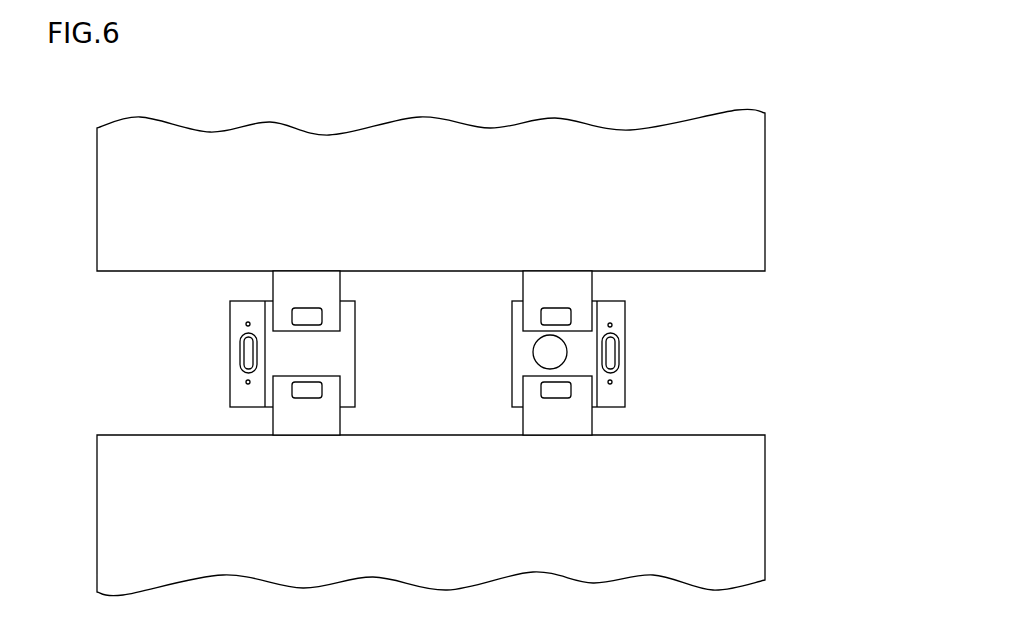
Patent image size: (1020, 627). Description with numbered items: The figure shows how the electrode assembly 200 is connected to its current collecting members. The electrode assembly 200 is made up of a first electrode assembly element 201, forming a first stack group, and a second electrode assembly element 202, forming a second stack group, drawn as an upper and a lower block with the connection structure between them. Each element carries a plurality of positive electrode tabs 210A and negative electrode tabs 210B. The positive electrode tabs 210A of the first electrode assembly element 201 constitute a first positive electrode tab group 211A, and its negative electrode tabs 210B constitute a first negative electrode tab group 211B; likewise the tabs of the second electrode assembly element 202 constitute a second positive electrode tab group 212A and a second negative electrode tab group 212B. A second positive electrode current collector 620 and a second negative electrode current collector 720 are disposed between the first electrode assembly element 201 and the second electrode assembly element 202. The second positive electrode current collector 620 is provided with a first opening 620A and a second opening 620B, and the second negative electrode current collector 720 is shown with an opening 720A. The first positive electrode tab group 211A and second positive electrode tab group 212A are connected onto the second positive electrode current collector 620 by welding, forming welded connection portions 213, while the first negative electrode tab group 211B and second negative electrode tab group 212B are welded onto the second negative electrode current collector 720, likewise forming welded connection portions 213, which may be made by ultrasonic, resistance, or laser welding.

The electrode assembly 200 is at (826, 222).
The first electrode assembly element 201 is at (765, 235).
The second electrode assembly element 202 is at (765, 470).
The positive electrode tab 210A is at (739, 278).
The negative electrode tab 210B is at (116, 278).
The first positive electrode tab group 211A is at (577, 288).
The first negative electrode tab group 211B is at (287, 288).
The second positive electrode tab group 212A is at (577, 418).
The second negative electrode tab group 212B is at (287, 418).
The welded connection portion 213 is at (300, 315).
The second positive electrode current collector 620 is at (522, 360).
The first opening 620A is at (594, 357).
The second opening 620B is at (535, 345).
The second negative electrode current collector 720 is at (342, 352).
The opening 720A is at (259, 360).